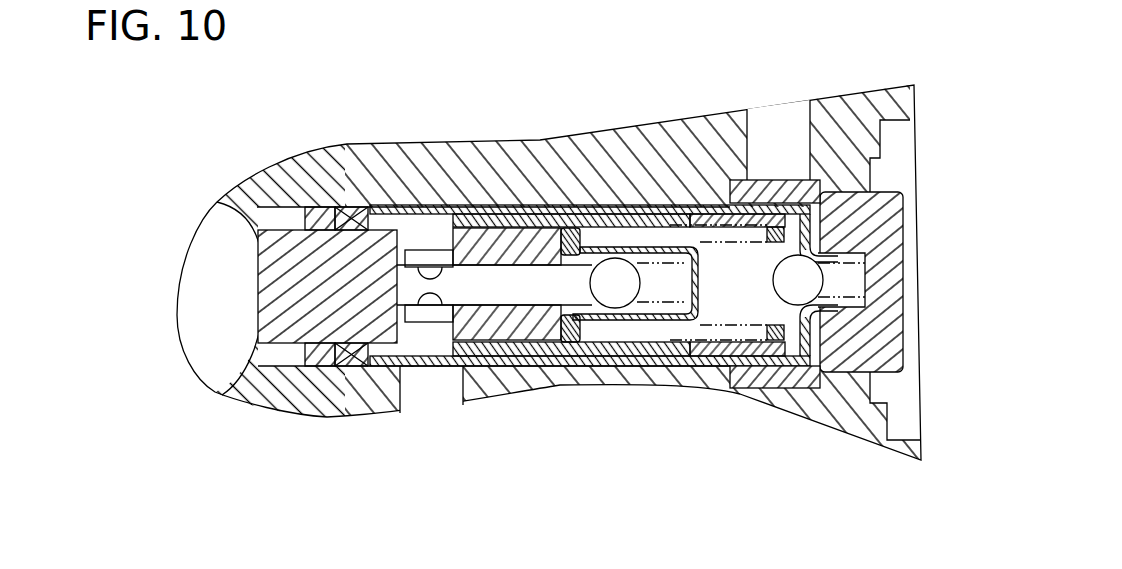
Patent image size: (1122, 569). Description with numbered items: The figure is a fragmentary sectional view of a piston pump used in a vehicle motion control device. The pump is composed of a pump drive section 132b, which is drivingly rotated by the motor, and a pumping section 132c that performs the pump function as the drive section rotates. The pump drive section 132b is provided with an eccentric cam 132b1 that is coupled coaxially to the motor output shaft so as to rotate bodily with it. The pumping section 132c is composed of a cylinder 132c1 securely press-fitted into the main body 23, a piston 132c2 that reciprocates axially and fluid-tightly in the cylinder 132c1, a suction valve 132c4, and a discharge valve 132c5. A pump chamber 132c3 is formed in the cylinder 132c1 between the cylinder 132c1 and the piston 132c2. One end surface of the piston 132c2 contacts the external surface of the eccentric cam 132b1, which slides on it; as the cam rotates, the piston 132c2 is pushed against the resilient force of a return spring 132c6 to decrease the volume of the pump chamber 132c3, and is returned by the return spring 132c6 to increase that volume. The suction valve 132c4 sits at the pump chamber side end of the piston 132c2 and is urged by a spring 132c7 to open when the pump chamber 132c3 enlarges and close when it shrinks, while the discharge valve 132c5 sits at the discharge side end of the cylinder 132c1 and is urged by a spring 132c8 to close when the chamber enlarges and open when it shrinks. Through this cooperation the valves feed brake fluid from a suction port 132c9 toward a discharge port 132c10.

The main body 23 is at (523, 157).
The pump drive section 132b is at (223, 350).
The eccentric cam 132b1 is at (220, 338).
The piston 132c2 is at (367, 245).
The pumping section 132c is at (557, 242).
The cylinder 132c1 is at (660, 210).
The suction valve 132c4 is at (614, 273).
The discharge valve 132c5 is at (806, 272).
The discharge port 132c10 is at (768, 110).
The suction port 132c9 is at (433, 383).
The spring 132c7 is at (670, 303).
The pump chamber 132c3 is at (723, 313).
The return spring 132c6 is at (763, 350).
The spring 132c8 is at (860, 395).